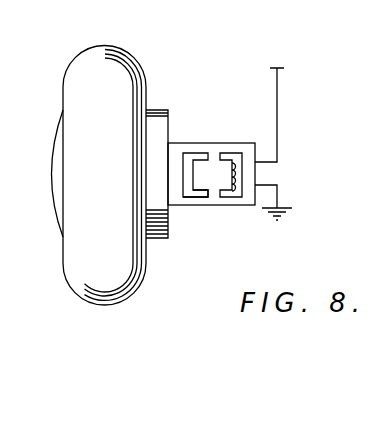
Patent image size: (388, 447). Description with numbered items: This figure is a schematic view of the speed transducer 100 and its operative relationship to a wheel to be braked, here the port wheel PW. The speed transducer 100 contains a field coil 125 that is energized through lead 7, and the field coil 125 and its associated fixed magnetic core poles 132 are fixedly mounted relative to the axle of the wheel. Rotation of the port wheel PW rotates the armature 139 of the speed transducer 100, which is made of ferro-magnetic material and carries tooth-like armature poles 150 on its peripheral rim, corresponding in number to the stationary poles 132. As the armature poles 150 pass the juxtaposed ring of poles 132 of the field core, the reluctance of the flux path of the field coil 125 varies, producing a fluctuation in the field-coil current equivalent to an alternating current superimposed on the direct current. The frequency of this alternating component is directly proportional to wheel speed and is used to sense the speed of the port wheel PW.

The port wheel PW is at (72, 63).
The speed transducer 100 is at (196, 144).
The armature 139 is at (183, 178).
The armature poles 150 is at (198, 197).
The fixed magnetic core poles 132 is at (232, 197).
The field coil 125 is at (243, 181).
The lead 7 is at (277, 92).